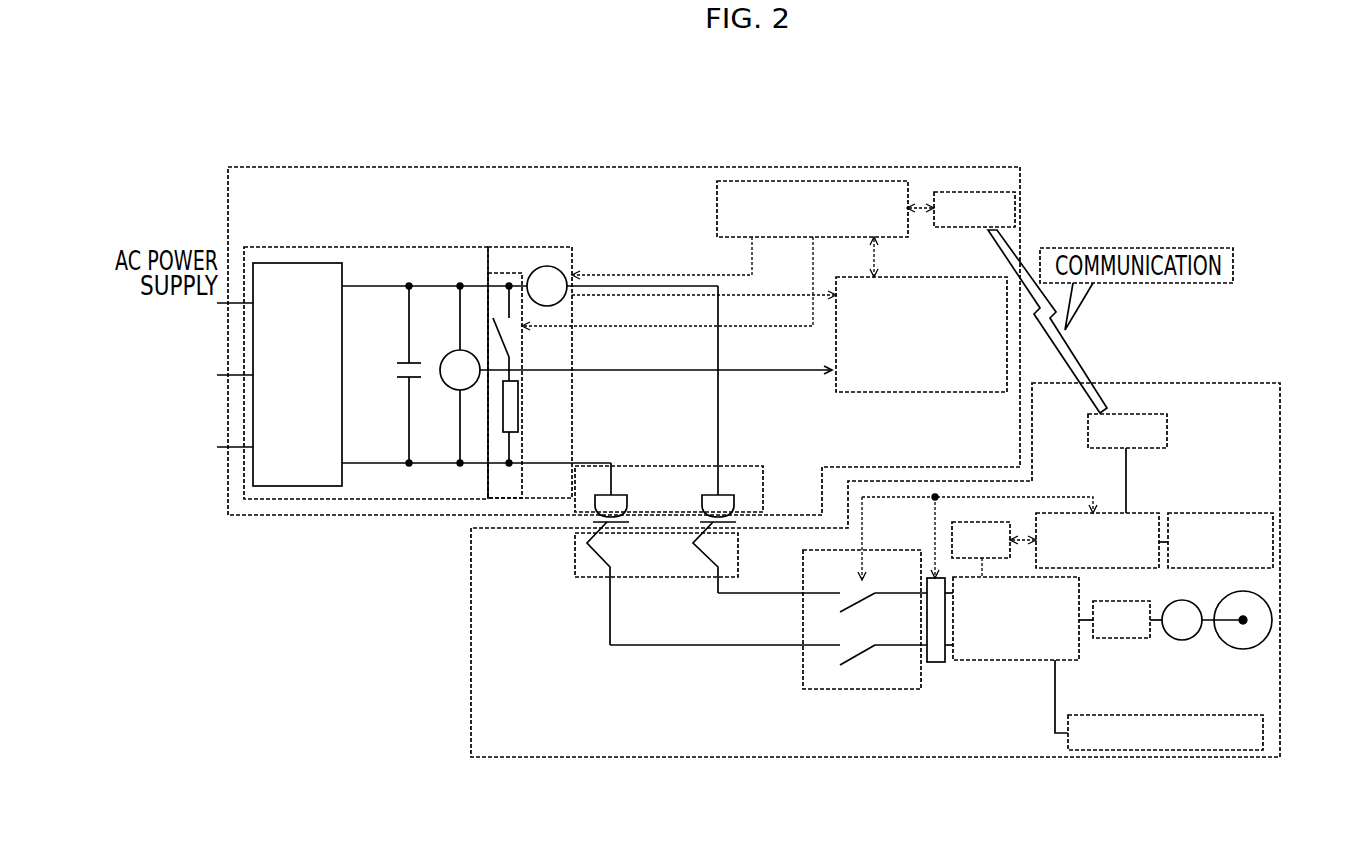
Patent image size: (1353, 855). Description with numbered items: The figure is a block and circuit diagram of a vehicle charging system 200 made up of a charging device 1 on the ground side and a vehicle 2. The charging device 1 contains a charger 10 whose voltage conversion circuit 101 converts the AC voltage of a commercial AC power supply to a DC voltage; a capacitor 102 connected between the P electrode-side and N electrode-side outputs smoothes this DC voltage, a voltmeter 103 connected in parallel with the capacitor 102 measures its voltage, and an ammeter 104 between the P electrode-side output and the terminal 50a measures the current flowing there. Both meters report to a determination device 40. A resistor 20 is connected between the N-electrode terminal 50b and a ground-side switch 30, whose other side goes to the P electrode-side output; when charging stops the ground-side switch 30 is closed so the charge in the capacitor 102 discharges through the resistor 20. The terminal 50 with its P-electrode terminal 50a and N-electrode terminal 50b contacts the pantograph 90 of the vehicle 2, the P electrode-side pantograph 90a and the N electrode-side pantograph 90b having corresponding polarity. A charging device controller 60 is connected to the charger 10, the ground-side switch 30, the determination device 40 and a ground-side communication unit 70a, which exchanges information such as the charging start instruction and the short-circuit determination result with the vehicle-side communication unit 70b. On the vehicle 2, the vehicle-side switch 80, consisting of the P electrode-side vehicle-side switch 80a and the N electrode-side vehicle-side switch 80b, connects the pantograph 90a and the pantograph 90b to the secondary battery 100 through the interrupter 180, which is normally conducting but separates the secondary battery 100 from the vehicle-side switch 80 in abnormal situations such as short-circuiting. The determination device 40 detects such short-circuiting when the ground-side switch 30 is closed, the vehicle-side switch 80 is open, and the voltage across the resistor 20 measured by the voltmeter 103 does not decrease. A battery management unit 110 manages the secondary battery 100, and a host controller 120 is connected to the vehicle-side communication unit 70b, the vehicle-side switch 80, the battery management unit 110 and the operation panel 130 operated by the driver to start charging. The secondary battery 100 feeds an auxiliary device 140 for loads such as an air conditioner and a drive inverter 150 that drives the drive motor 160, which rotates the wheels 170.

The vehicle charging system 200 is at (672, 138).
The charging device 1 is at (527, 142).
The vehicle 2 is at (472, 685).
The charger 10 is at (558, 250).
The resistor 20 is at (522, 407).
The ground-side switch 30 is at (503, 320).
The determination device 40 is at (923, 393).
The terminal 50 is at (690, 482).
The P-electrode terminal 50a is at (736, 498).
The N-electrode terminal 50b is at (593, 500).
The charging device controller 60 is at (813, 167).
The ground-side communication unit 70a is at (973, 192).
The vehicle-side communication unit 70b is at (1135, 413).
The vehicle-side switch 80 is at (760, 638).
The P electrode-side vehicle-side switch 80a is at (855, 595).
The N electrode-side vehicle-side switch 80b is at (883, 688).
The pantograph 90 is at (651, 606).
The P electrode-side pantograph 90a is at (712, 550).
The N electrode-side pantograph 90b is at (595, 557).
The secondary battery 100 is at (995, 662).
The voltage conversion circuit 101 is at (297, 263).
The capacitor 102 is at (400, 380).
The voltmeter 103 is at (448, 392).
The ammeter 104 is at (562, 272).
The battery management unit 110 is at (962, 523).
The host controller 120 is at (1143, 512).
The operation panel 130 is at (1240, 512).
The auxiliary device 140 is at (1113, 715).
The drive inverter 150 is at (1113, 638).
The drive motor 160 is at (1173, 640).
The wheels 170 is at (1225, 649).
The interrupter 180 is at (936, 662).